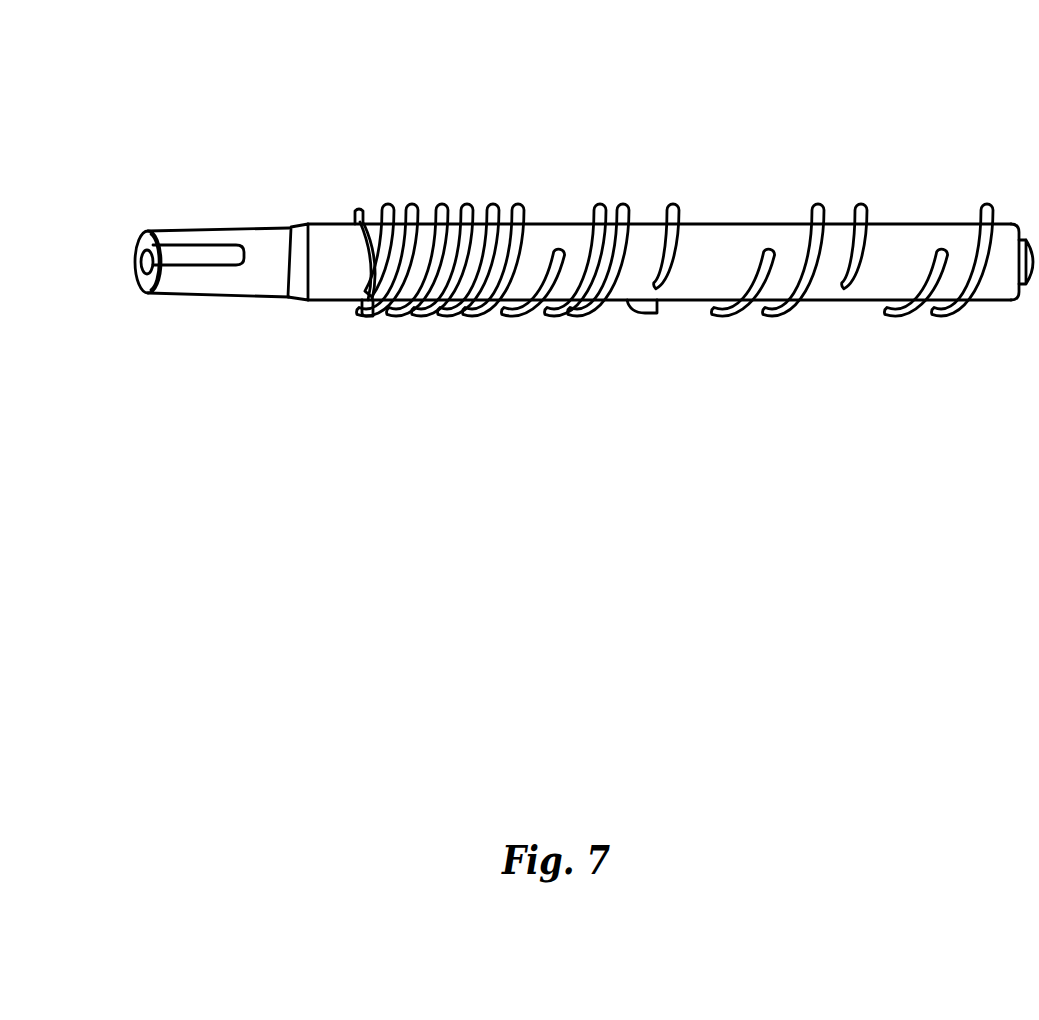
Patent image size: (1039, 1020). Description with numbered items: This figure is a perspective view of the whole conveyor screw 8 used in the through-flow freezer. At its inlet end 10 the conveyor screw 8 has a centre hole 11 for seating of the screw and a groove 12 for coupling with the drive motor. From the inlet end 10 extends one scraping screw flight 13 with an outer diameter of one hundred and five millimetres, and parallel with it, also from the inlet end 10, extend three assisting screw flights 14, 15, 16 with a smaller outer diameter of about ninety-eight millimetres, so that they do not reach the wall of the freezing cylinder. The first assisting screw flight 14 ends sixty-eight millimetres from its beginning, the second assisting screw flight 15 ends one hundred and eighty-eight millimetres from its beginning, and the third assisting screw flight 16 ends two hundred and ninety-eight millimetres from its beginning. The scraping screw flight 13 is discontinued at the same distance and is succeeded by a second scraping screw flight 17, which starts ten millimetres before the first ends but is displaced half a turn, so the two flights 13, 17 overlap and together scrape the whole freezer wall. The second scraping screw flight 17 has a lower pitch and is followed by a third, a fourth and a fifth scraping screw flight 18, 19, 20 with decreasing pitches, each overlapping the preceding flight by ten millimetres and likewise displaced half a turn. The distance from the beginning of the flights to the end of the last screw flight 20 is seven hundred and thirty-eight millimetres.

The conveyor screw 8 is at (340, 120).
The inlet end 10 is at (333, 315).
The centre hole 11 is at (146, 262).
The groove 12 is at (195, 252).
The scraping screw flight 13 is at (371, 312).
The first assisting screw flight 14 is at (437, 200).
The second assisting screw flight 15 is at (470, 200).
The third assisting screw flight 16 is at (497, 207).
The second scraping screw flight 17 is at (677, 200).
The third scraping screw flight 18 is at (820, 200).
The fourth scraping screw flight 19 is at (902, 322).
The fifth scraping screw flight 20 is at (985, 197).